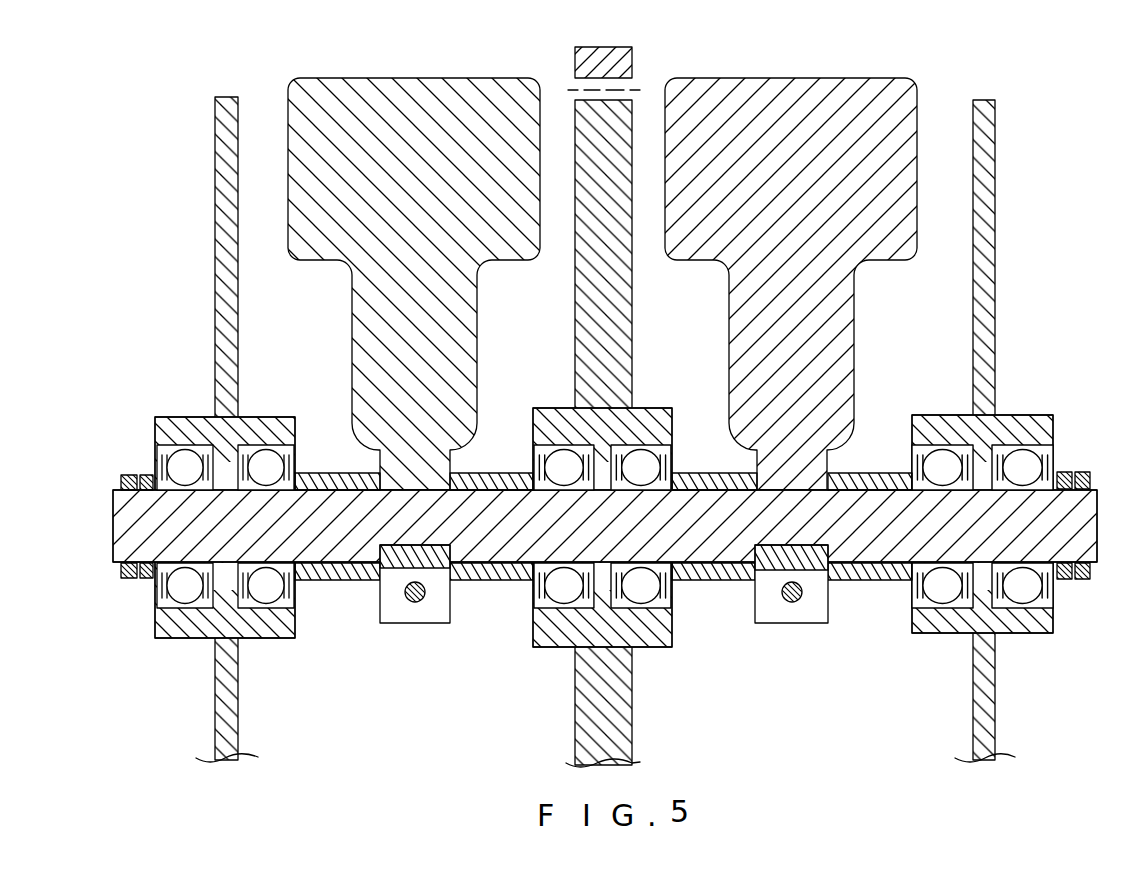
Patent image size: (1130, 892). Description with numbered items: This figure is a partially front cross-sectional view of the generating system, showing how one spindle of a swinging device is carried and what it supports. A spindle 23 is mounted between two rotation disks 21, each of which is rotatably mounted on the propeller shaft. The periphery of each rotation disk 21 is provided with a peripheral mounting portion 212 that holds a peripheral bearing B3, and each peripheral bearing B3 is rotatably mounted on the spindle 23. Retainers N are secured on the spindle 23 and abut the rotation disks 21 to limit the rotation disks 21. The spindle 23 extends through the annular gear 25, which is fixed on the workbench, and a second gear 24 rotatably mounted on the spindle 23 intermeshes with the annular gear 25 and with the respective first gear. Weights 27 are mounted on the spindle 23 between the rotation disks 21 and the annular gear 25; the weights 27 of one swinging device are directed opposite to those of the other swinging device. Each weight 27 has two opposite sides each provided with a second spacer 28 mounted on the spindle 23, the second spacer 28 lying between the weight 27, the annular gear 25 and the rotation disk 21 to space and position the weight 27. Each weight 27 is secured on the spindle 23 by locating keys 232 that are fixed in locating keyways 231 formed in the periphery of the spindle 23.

The rotation disk 21 is at (215, 179).
The peripheral mounting portion 212 is at (187, 420).
The spindle 23 is at (125, 536).
The locating keyway 231 is at (412, 548).
The locating key 232 is at (427, 552).
The second gear 24 is at (584, 121).
The annular gear 25 is at (610, 58).
The weight 27 is at (418, 90).
The second spacer 28 is at (330, 573).
The peripheral bearing B3 is at (185, 468).
The retainer N is at (128, 580).